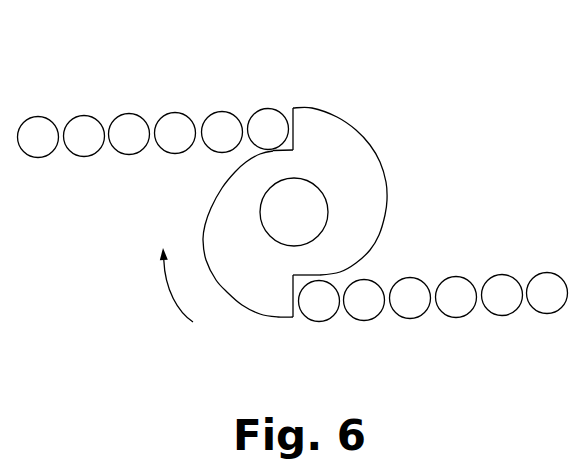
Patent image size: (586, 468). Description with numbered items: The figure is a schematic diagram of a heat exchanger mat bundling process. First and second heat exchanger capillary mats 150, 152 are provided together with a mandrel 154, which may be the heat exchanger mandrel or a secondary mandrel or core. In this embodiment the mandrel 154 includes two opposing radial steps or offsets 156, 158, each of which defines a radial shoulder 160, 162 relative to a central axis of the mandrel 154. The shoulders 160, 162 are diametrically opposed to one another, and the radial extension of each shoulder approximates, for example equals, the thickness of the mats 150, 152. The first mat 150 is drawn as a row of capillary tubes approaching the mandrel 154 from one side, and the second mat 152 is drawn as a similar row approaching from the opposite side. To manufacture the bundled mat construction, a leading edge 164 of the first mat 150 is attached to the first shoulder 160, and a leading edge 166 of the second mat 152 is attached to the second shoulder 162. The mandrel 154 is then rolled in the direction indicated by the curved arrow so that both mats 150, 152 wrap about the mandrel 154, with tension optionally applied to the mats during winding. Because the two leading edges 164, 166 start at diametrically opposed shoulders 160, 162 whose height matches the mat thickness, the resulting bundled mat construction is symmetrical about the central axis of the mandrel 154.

The first heat exchanger capillary mat 150 is at (149, 101).
The second heat exchanger capillary mat 152 is at (488, 330).
The mandrel 154 is at (328, 201).
The radial step 156 is at (320, 128).
The radial step 158 is at (272, 305).
The first shoulder 160 is at (292, 116).
The second shoulder 162 is at (296, 312).
The leading edge 164 is at (293, 120).
The leading edge 166 is at (297, 280).